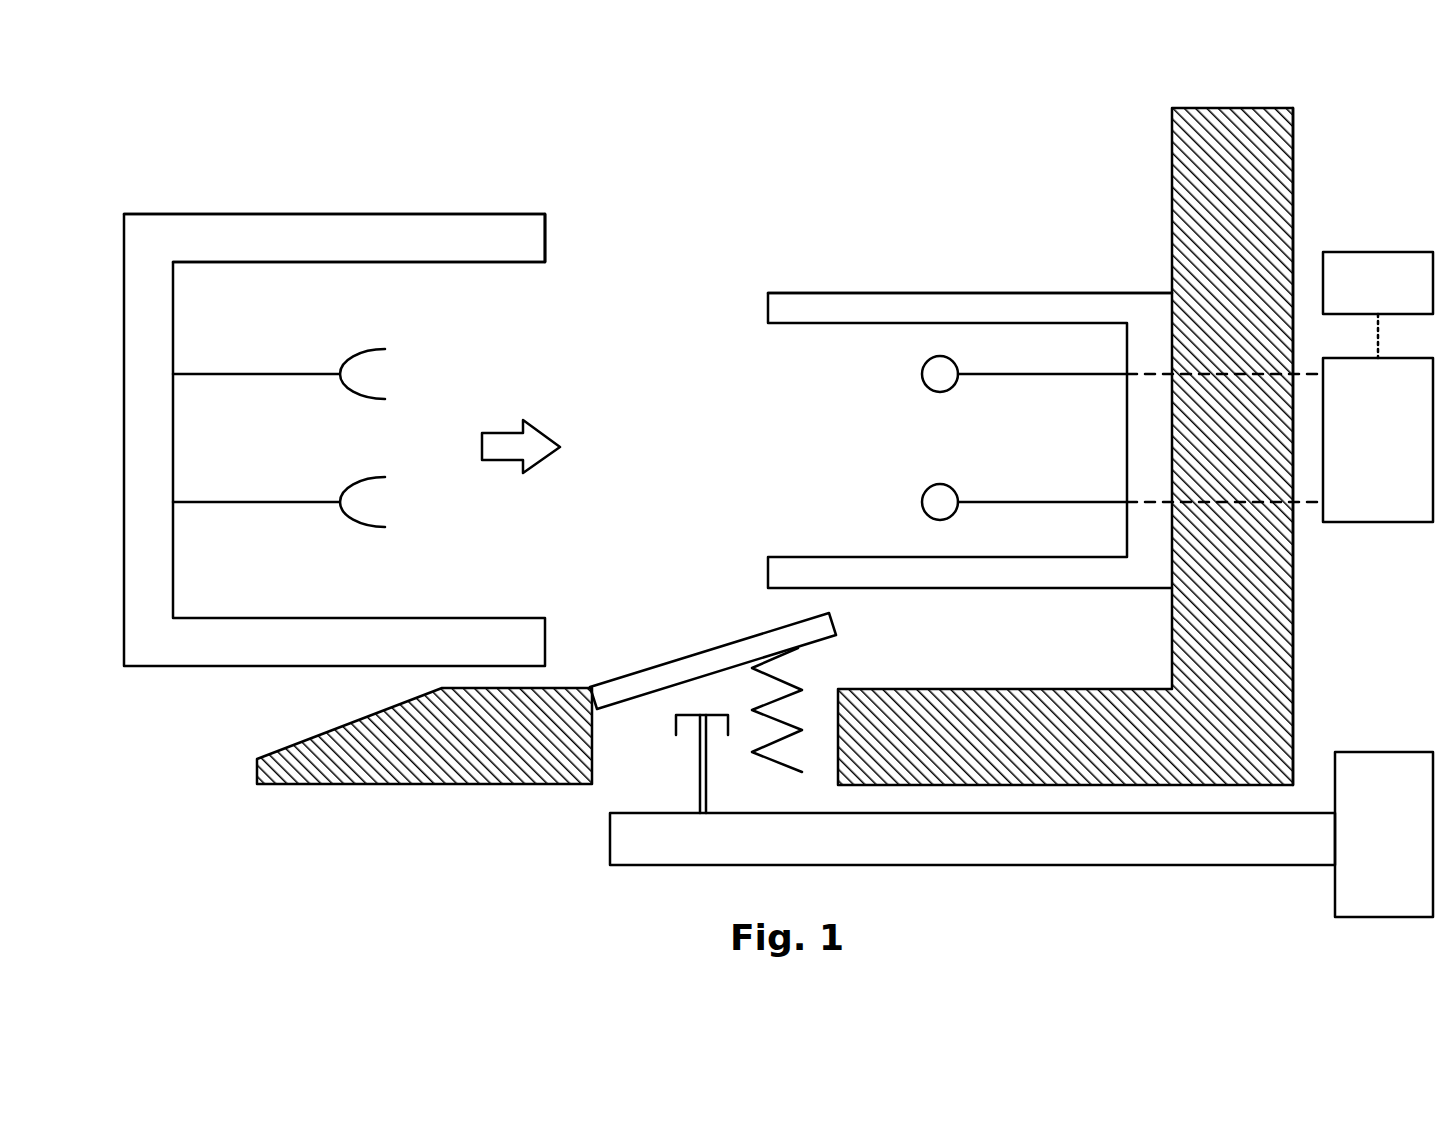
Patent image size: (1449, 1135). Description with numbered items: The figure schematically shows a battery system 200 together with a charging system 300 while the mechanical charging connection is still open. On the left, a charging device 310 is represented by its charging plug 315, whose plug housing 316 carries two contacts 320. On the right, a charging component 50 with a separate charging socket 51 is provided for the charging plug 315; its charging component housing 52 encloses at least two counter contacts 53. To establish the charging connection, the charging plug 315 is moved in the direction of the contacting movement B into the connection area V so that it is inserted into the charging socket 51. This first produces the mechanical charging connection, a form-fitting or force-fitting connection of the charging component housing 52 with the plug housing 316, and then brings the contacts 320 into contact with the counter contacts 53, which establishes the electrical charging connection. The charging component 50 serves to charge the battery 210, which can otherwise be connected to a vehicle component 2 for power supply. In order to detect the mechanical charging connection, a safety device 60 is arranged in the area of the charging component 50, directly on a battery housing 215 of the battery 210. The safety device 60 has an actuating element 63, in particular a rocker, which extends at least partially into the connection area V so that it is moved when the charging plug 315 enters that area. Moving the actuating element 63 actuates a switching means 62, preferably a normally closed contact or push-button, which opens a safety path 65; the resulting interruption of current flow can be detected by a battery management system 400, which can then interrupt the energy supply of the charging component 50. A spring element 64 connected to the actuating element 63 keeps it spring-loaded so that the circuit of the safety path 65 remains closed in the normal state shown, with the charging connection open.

The charging system 300 is at (388, 410).
The charging device 310 is at (150, 702).
The charging plug 315 is at (598, 200).
The plug housing 316 is at (402, 213).
The contacts 320 is at (295, 375).
The charging component 50 is at (1045, 394).
The charging socket 51 is at (875, 263).
The charging component housing 52 is at (1050, 292).
The counter contacts 53 is at (1047, 375).
The safety device 60 is at (713, 599).
The switching means 62 is at (697, 757).
The actuating element 63 is at (755, 630).
The spring element 64 is at (783, 702).
The safety path 65 is at (972, 840).
The battery system 200 is at (1139, 415).
The battery housing 215 is at (1293, 632).
The vehicle component 2 is at (1370, 300).
The battery 210 is at (1352, 457).
The battery management system 400 is at (1358, 852).
The contacting movement B is at (518, 432).
The connection area V is at (660, 513).